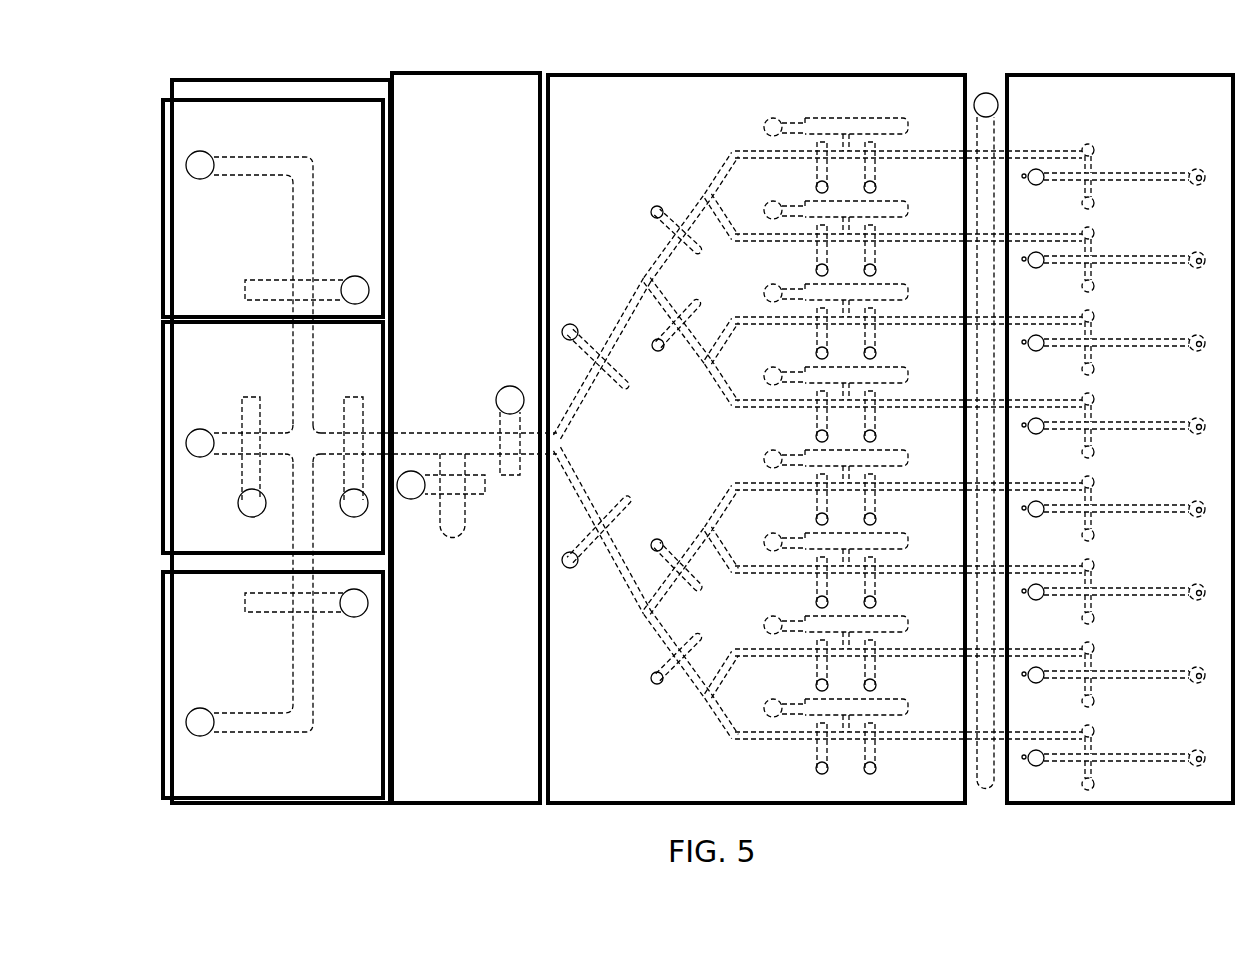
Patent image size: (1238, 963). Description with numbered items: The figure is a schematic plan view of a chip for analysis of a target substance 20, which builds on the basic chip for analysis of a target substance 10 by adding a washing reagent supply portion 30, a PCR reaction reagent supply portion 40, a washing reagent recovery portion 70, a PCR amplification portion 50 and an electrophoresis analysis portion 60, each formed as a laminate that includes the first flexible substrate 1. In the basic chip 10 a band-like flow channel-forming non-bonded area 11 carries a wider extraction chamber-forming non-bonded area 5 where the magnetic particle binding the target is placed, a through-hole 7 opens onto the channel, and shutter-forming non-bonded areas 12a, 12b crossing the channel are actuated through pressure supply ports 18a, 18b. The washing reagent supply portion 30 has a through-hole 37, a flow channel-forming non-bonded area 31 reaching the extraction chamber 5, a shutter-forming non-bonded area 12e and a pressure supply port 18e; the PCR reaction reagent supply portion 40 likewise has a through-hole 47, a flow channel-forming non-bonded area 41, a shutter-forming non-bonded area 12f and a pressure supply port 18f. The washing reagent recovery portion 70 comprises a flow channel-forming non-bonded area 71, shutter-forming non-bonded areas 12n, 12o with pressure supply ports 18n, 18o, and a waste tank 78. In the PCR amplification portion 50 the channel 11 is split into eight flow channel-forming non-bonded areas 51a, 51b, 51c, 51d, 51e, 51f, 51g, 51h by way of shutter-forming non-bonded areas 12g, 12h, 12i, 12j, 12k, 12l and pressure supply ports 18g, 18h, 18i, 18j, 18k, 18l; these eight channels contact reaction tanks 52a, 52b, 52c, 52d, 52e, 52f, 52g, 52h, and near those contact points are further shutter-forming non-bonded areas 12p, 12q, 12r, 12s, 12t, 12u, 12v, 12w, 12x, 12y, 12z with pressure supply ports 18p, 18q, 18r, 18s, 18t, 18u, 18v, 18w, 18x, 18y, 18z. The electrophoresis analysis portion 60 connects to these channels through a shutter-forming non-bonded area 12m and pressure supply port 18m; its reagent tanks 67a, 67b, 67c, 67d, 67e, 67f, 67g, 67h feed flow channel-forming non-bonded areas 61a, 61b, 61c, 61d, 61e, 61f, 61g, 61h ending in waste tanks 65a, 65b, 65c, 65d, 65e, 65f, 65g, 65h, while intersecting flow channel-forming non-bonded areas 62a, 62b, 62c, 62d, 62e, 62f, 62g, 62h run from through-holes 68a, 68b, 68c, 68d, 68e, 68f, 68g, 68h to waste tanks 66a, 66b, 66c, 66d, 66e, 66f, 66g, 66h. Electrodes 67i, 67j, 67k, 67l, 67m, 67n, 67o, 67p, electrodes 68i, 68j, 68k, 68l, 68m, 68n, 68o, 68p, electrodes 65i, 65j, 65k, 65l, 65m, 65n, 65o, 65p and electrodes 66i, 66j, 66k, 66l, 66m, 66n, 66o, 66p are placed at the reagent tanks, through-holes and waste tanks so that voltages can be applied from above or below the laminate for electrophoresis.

The first flexible substrate 1 is at (285, 88).
The extraction chamber-forming non-bonded area 5 is at (308, 456).
The through-hole 7 is at (200, 436).
The chip for analysis of a target substance 10 is at (163, 443).
The flow channel-forming non-bonded area 11 is at (286, 450).
The chip for analysis of a target substance 20 is at (1143, 38).
The washing reagent supply portion 30 is at (163, 678).
The flow channel-forming non-bonded area 31 is at (256, 736).
The through-hole 37 is at (202, 717).
The PCR reaction reagent supply portion 40 is at (163, 208).
The flow channel-forming non-bonded area 41 is at (260, 157).
The through-hole 47 is at (202, 162).
The PCR amplification portion 50 is at (824, 72).
The electrophoresis analysis portion 60 is at (1184, 72).
The washing reagent recovery portion 70 is at (478, 72).
The flow channel-forming non-bonded area 71 is at (412, 442).
The waste tank 78 is at (452, 538).
The pressure supply port 18m is at (986, 93).
The shutter-forming non-bonded area 12m is at (986, 793).
The shutter-forming non-bonded area 12a is at (251, 402).
The shutter-forming non-bonded area 12b is at (355, 402).
The shutter-forming non-bonded area 12e is at (254, 604).
The shutter-forming non-bonded area 12f is at (254, 291).
The shutter-forming non-bonded area 12g is at (617, 388).
The shutter-forming non-bonded area 12h is at (619, 506).
The shutter-forming non-bonded area 12i is at (671, 231).
The shutter-forming non-bonded area 12j is at (670, 337).
The shutter-forming non-bonded area 12k is at (671, 558).
The shutter-forming non-bonded area 12l is at (660, 668).
The shutter-forming non-bonded area 12n is at (478, 498).
The shutter-forming non-bonded area 12o is at (498, 429).
The shutter-forming non-bonded area 12p is at (817, 169).
The shutter-forming non-bonded area 12q is at (875, 169).
The shutter-forming non-bonded area 12r is at (794, 247).
The shutter-forming non-bonded area 12s is at (894, 247).
The shutter-forming non-bonded area 12t is at (794, 330).
The shutter-forming non-bonded area 12u is at (895, 330).
The shutter-forming non-bonded area 12v is at (794, 413).
The shutter-forming non-bonded area 12w is at (896, 413).
The shutter-forming non-bonded area 12x is at (794, 496).
The shutter-forming non-bonded area 12y is at (894, 496).
The shutter-forming non-bonded area 12z is at (794, 579).
The pressure supply port 18a is at (238, 505).
The pressure supply port 18b is at (354, 517).
The pressure supply port 18e is at (354, 619).
The pressure supply port 18f is at (355, 286).
The pressure supply port 18g is at (576, 328).
The pressure supply port 18h is at (577, 568).
The pressure supply port 18i is at (653, 206).
The pressure supply port 18j is at (656, 353).
The pressure supply port 18k is at (655, 537).
The pressure supply port 18l is at (652, 686).
The pressure supply port 18n is at (411, 500).
The pressure supply port 18o is at (510, 386).
The pressure supply port 18p is at (816, 188).
The pressure supply port 18q is at (876, 189).
The pressure supply port 18r is at (795, 274).
The pressure supply port 18s is at (893, 275).
The pressure supply port 18t is at (795, 357).
The pressure supply port 18u is at (894, 358).
The pressure supply port 18v is at (795, 440).
The pressure supply port 18w is at (895, 441).
The pressure supply port 18x is at (795, 523).
The pressure supply port 18y is at (894, 524).
The pressure supply port 18z is at (795, 606).
The flow channel-forming non-bonded area 51a is at (718, 176).
The flow channel-forming non-bonded area 51b is at (892, 253).
The flow channel-forming non-bonded area 51c is at (886, 326).
The flow channel-forming non-bonded area 51d is at (892, 419).
The flow channel-forming non-bonded area 51e is at (886, 492).
The flow channel-forming non-bonded area 51f is at (892, 585).
The flow channel-forming non-bonded area 51g is at (886, 658).
The flow channel-forming non-bonded area 51h is at (892, 751).
The reaction tank 52a is at (908, 128).
The reaction tank 52b is at (860, 217).
The reaction tank 52c is at (860, 300).
The reaction tank 52d is at (860, 383).
The reaction tank 52e is at (860, 466).
The reaction tank 52f is at (859, 549).
The reaction tank 52g is at (860, 632).
The reaction tank 52h is at (860, 715).
The flow channel-forming non-bonded area 61a is at (1084, 188).
The flow channel-forming non-bonded area 61b is at (1072, 274).
The flow channel-forming non-bonded area 61c is at (1072, 357).
The flow channel-forming non-bonded area 61d is at (1072, 440).
The flow channel-forming non-bonded area 61e is at (1072, 523).
The flow channel-forming non-bonded area 61f is at (1072, 606).
The flow channel-forming non-bonded area 61g is at (1072, 689).
The flow channel-forming non-bonded area 61h is at (1072, 772).
The flow channel-forming non-bonded area 62a is at (1161, 172).
The flow channel-forming non-bonded area 62b is at (1144, 245).
The flow channel-forming non-bonded area 62c is at (1144, 328).
The flow channel-forming non-bonded area 62d is at (1144, 411).
The flow channel-forming non-bonded area 62e is at (1144, 494).
The flow channel-forming non-bonded area 62f is at (1144, 577).
The flow channel-forming non-bonded area 62g is at (1144, 660).
The flow channel-forming non-bonded area 62h is at (1144, 743).
The waste tank 65a is at (1093, 190).
The waste tank 65b is at (1112, 272).
The waste tank 65c is at (1111, 355).
The waste tank 65d is at (1112, 438).
The waste tank 65e is at (1111, 521).
The waste tank 65f is at (1110, 604).
The waste tank 65g is at (1112, 687).
The waste tank 65h is at (1112, 770).
The electrode 65i is at (1094, 205).
The electrode 65j is at (1108, 289).
The electrode 65k is at (1110, 372).
The electrode 65l is at (1108, 455).
The electrode 65m is at (1112, 538).
The electrode 65n is at (1110, 621).
The electrode 65o is at (1110, 704).
The electrode 65p is at (1110, 787).
The waste tank 66a is at (1196, 186).
The waste tank 66b is at (1192, 279).
The waste tank 66c is at (1192, 362).
The waste tank 66d is at (1192, 445).
The waste tank 66e is at (1192, 528).
The waste tank 66f is at (1191, 611).
The waste tank 66g is at (1192, 694).
The waste tank 66h is at (1192, 777).
The electrode 66i is at (1201, 170).
The electrode 66j is at (1202, 247).
The electrode 66k is at (1204, 330).
The electrode 66l is at (1202, 413).
The electrode 66m is at (1206, 496).
The electrode 66n is at (1204, 579).
The electrode 66o is at (1204, 662).
The electrode 66p is at (1204, 745).
The reagent tank 67a is at (1093, 164).
The reagent tank 67b is at (1111, 248).
The reagent tank 67c is at (1110, 331).
The reagent tank 67d is at (1111, 414).
The reagent tank 67e is at (1110, 497).
The reagent tank 67f is at (1109, 580).
The reagent tank 67g is at (1111, 663).
The reagent tank 67h is at (1111, 746).
The electrode 67i is at (1094, 150).
The electrode 67j is at (1106, 232).
The electrode 67k is at (1108, 315).
The electrode 67l is at (1106, 398).
The electrode 67m is at (1110, 481).
The electrode 67n is at (1108, 564).
The electrode 67o is at (1108, 647).
The electrode 67p is at (1108, 730).
The through-hole 68a is at (1036, 169).
The through-hole 68b is at (1039, 243).
The through-hole 68c is at (1039, 326).
The through-hole 68d is at (1039, 409).
The through-hole 68e is at (1039, 492).
The through-hole 68f is at (1038, 575).
The through-hole 68g is at (1039, 658).
The through-hole 68h is at (1039, 741).
The electrode 68i is at (1031, 183).
The electrode 68j is at (1023, 274).
The electrode 68k is at (1025, 357).
The electrode 68l is at (1023, 440).
The electrode 68m is at (1027, 523).
The electrode 68n is at (1025, 606).
The electrode 68o is at (1025, 689).
The electrode 68p is at (1025, 772).